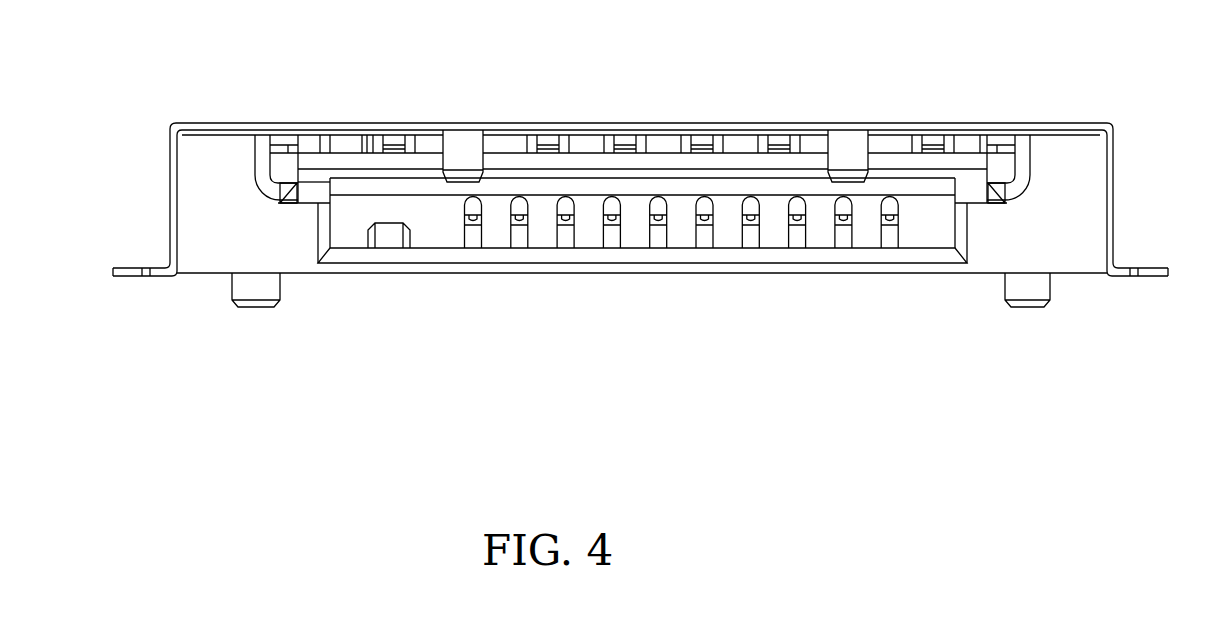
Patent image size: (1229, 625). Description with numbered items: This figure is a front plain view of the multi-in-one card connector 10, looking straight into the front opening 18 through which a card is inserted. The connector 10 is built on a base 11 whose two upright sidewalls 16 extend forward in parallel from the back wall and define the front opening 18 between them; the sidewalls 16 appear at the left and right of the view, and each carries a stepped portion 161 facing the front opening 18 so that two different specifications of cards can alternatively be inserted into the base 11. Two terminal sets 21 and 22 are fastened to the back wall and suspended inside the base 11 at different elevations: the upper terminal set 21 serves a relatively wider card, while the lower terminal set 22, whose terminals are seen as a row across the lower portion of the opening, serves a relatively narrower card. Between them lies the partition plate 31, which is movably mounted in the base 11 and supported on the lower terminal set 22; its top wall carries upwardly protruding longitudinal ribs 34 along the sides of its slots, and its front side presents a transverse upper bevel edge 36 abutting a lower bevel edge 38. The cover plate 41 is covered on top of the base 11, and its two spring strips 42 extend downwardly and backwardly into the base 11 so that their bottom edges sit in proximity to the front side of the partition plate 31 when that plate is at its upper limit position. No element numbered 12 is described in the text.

The multi-in-one card connector 10 is at (631, 231).
The base 11 is at (212, 290).
The base portion 12 is at (385, 273).
The upright sidewall 16 is at (197, 190).
The stepped portion 161 is at (305, 210).
The front opening 18 is at (435, 235).
The upper terminal set 21 is at (693, 148).
The lower terminal set 22 is at (520, 215).
The partition plate 31 is at (748, 143).
The longitudinal rib 34 is at (650, 140).
The upper bevel edge 36 is at (817, 152).
The lower bevel edge 38 is at (677, 187).
The cover plate 41 is at (579, 110).
The spring strip 42 is at (463, 165).